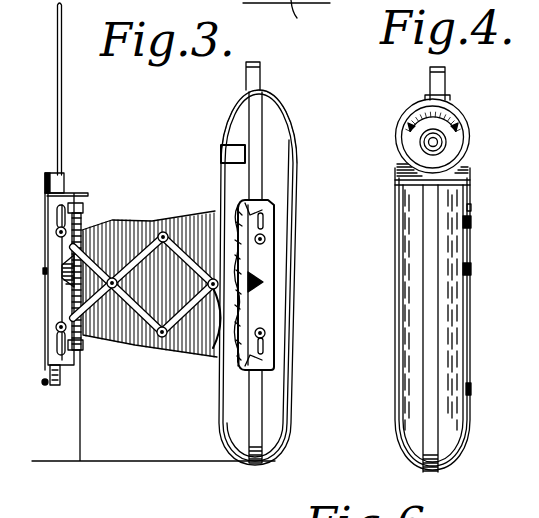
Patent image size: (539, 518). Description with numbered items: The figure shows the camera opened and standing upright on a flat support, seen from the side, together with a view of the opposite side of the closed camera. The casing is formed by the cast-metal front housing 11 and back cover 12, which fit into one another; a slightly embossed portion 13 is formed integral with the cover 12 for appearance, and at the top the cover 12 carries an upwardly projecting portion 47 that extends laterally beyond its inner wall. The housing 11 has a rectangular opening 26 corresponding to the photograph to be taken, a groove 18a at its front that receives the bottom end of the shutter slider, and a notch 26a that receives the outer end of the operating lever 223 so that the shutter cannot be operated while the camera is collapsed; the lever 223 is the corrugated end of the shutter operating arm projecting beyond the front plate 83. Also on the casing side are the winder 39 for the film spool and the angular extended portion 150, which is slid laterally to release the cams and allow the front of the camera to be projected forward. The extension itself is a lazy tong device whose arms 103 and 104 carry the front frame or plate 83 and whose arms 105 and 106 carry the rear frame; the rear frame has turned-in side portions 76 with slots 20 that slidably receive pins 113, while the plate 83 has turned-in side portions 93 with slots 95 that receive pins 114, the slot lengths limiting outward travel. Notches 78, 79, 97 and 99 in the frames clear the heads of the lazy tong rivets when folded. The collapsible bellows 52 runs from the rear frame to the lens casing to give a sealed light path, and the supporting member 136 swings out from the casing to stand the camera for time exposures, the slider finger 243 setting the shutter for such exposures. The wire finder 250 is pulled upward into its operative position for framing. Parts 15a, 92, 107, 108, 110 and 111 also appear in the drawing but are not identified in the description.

In FIG. 4, the front housing 11 is at (470, 355).
In FIG. 4, the back cover 12 is at (395, 355).
In FIG. 3, the embossed portion 13 is at (258, 133).
In FIG. 4, the embossed portion 13 is at (430, 437).
In FIG. 3, the dome top 15a is at (240, 120).
In FIG. 3, the groove 18a is at (309, 16).
In FIG. 3, the slots 20 is at (265, 230).
In FIG. 4, the opening 26 is at (472, 218).
In FIG. 4, the notch 26a is at (472, 272).
In FIG. 4, the winder 39 is at (472, 124).
In FIG. 3, the upwardly projecting portion 47 is at (260, 73).
In FIG. 4, the upwardly projecting portion 47 is at (429, 75).
In FIG. 3, the collapsible bellows 52 is at (97, 347).
In FIG. 3, the turned-in side portions 76 is at (257, 260).
In FIG. 3, the notch 78 is at (260, 212).
In FIG. 3, the notch 79 is at (262, 283).
In FIG. 3, the front frame or plate 83 is at (45, 270).
In FIG. 3, the antenna collar 92 is at (50, 167).
In FIG. 3, the turned-in side portions 93 is at (55, 290).
In FIG. 3, the slots 95 is at (65, 213).
In FIG. 3, the notch 97 is at (83, 210).
In FIG. 3, the notch 99 is at (65, 252).
In FIG. 3, the arm 103 is at (133, 233).
In FIG. 3, the arm 104 is at (138, 310).
In FIG. 3, the arm 105 is at (187, 233).
In FIG. 3, the arm 106 is at (192, 317).
In FIG. 3, the scissor arm 107 is at (97, 343).
In FIG. 3, the pivot 108 is at (213, 357).
In FIG. 3, the pivot 110 is at (163, 232).
In FIG. 3, the scissor arm 111 is at (173, 352).
In FIG. 3, the pins 113 is at (268, 242).
In FIG. 3, the pins 114 is at (56, 232).
In FIG. 3, the supporting member 136 is at (83, 438).
In FIG. 3, the angular extended portion 150 is at (220, 153).
In FIG. 4, the operating lever portion 223 is at (472, 226).
In FIG. 3, the finger 243 is at (48, 392).
In FIG. 4, the finger 243 is at (472, 403).
In FIG. 3, the finder 250 is at (63, 91).